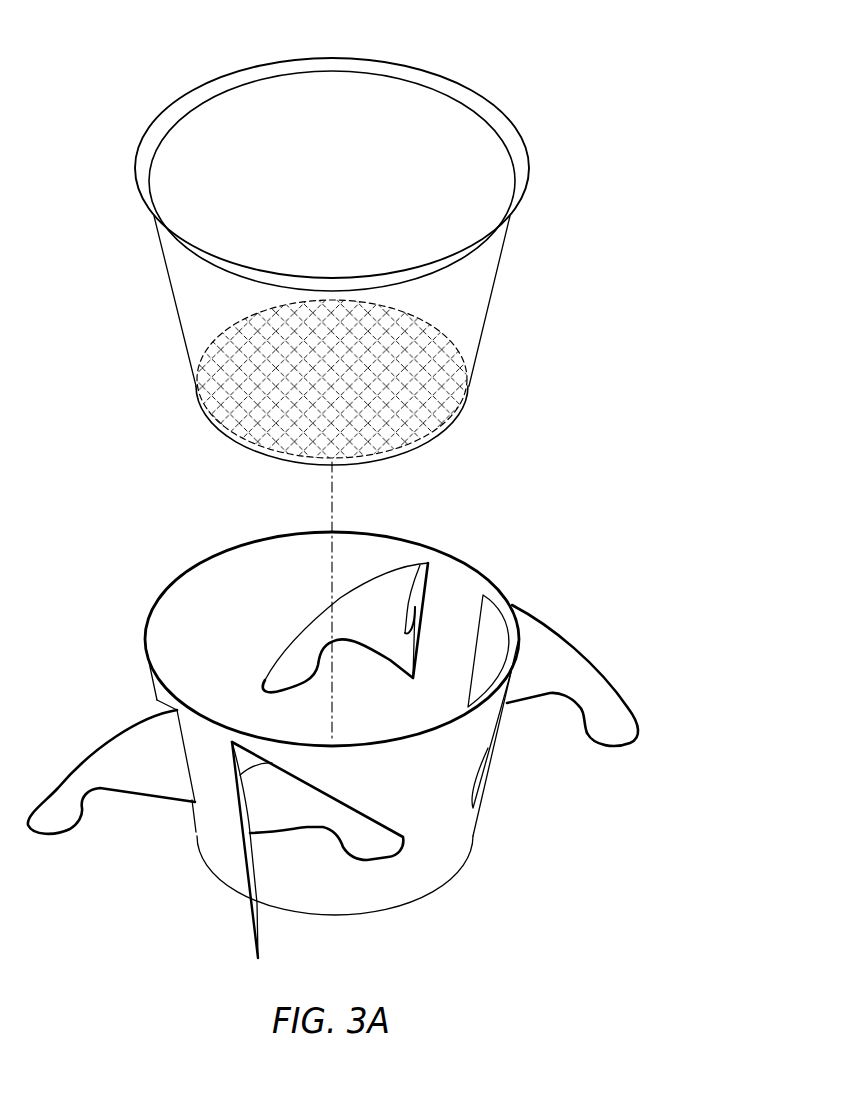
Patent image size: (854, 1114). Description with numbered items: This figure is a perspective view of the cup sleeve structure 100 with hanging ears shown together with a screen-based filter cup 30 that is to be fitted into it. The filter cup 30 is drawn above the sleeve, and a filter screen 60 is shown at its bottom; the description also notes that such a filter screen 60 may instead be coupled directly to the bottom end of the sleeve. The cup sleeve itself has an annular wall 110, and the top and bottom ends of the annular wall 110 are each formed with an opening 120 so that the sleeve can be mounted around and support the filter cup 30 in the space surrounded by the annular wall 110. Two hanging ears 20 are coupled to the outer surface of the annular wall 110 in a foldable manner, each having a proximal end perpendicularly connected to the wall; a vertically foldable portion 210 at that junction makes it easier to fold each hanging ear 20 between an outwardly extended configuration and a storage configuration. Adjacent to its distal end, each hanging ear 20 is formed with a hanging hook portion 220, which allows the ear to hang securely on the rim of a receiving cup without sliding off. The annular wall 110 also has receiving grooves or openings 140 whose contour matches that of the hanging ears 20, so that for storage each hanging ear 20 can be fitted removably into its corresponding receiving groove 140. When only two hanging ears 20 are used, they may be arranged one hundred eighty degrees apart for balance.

The screen-based filter cup 30 is at (500, 88).
The filter screen 60 is at (427, 407).
The cup sleeve structure 100 is at (513, 528).
The opening 120 is at (213, 600).
The annular wall 110 is at (462, 833).
The vertically foldable portion 210 is at (237, 808).
The hanging ear 20 is at (593, 687).
The hanging hook portion 220 is at (577, 707).
The receiving groove 140 is at (300, 815).